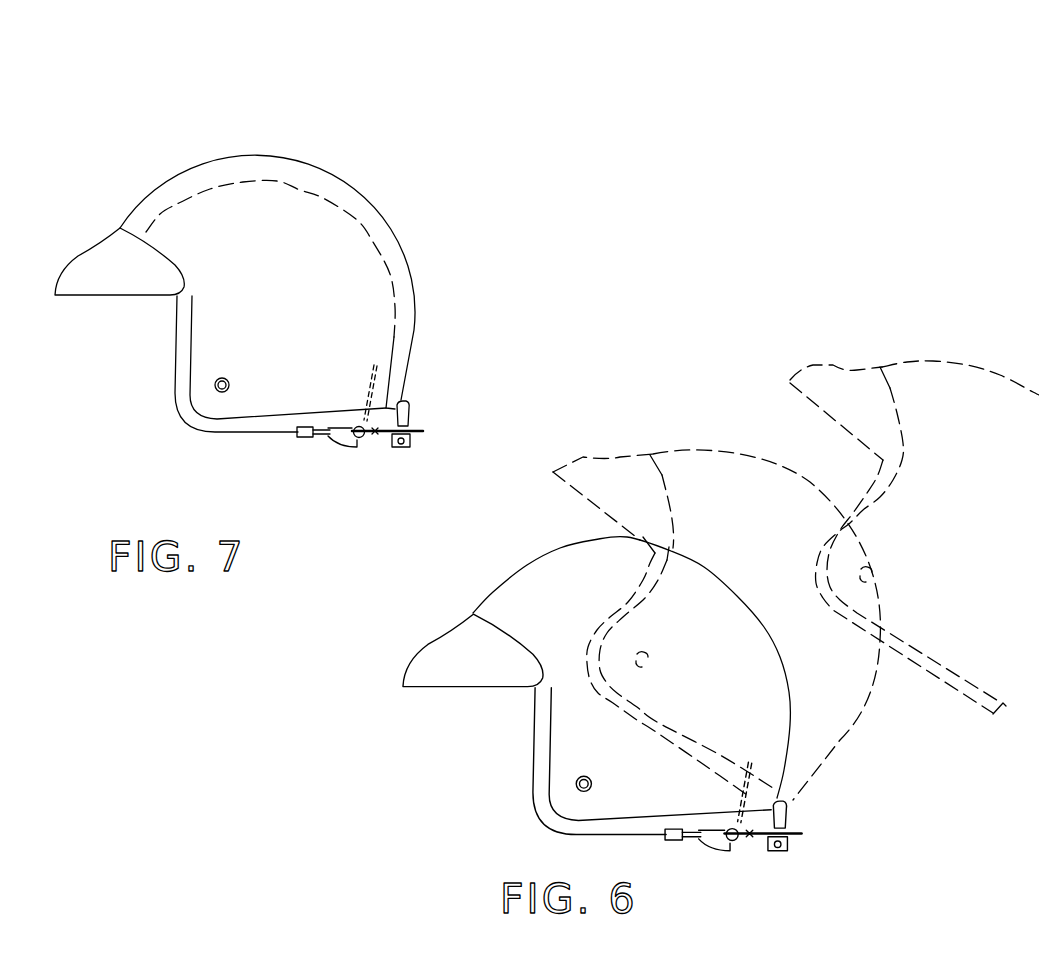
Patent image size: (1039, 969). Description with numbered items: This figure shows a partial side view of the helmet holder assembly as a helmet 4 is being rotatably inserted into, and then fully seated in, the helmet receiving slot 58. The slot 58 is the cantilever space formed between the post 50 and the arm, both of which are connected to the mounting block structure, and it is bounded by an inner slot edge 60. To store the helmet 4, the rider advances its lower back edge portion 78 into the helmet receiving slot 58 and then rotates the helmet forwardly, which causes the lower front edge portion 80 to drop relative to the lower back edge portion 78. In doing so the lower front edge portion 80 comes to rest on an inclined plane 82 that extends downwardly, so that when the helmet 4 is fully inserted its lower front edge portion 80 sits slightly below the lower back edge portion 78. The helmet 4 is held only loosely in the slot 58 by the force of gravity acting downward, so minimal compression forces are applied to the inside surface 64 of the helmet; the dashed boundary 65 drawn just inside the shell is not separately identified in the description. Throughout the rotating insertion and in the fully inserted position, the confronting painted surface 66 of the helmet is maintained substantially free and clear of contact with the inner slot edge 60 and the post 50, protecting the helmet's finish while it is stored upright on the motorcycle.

In FIG. 7, the helmet 4 is at (302, 296).
In FIG. 6, the post 50 is at (779, 814).
In FIG. 6, the helmet receiving slot 58 is at (772, 790).
In FIG. 7, the inner slot edge 60 is at (402, 405).
In FIG. 7, the inside surface 64 is at (298, 189).
In FIG. 7, the liner boundary 65 is at (395, 311).
In FIG. 7, the confronting painted surface 66 is at (417, 310).
In FIG. 7, the lower back edge portion 78 is at (390, 440).
In FIG. 7, the lower front edge portion 80 is at (212, 430).
In FIG. 7, the inclined plane 82 is at (375, 425).
In FIG. 6, the inclined plane 82 is at (750, 835).